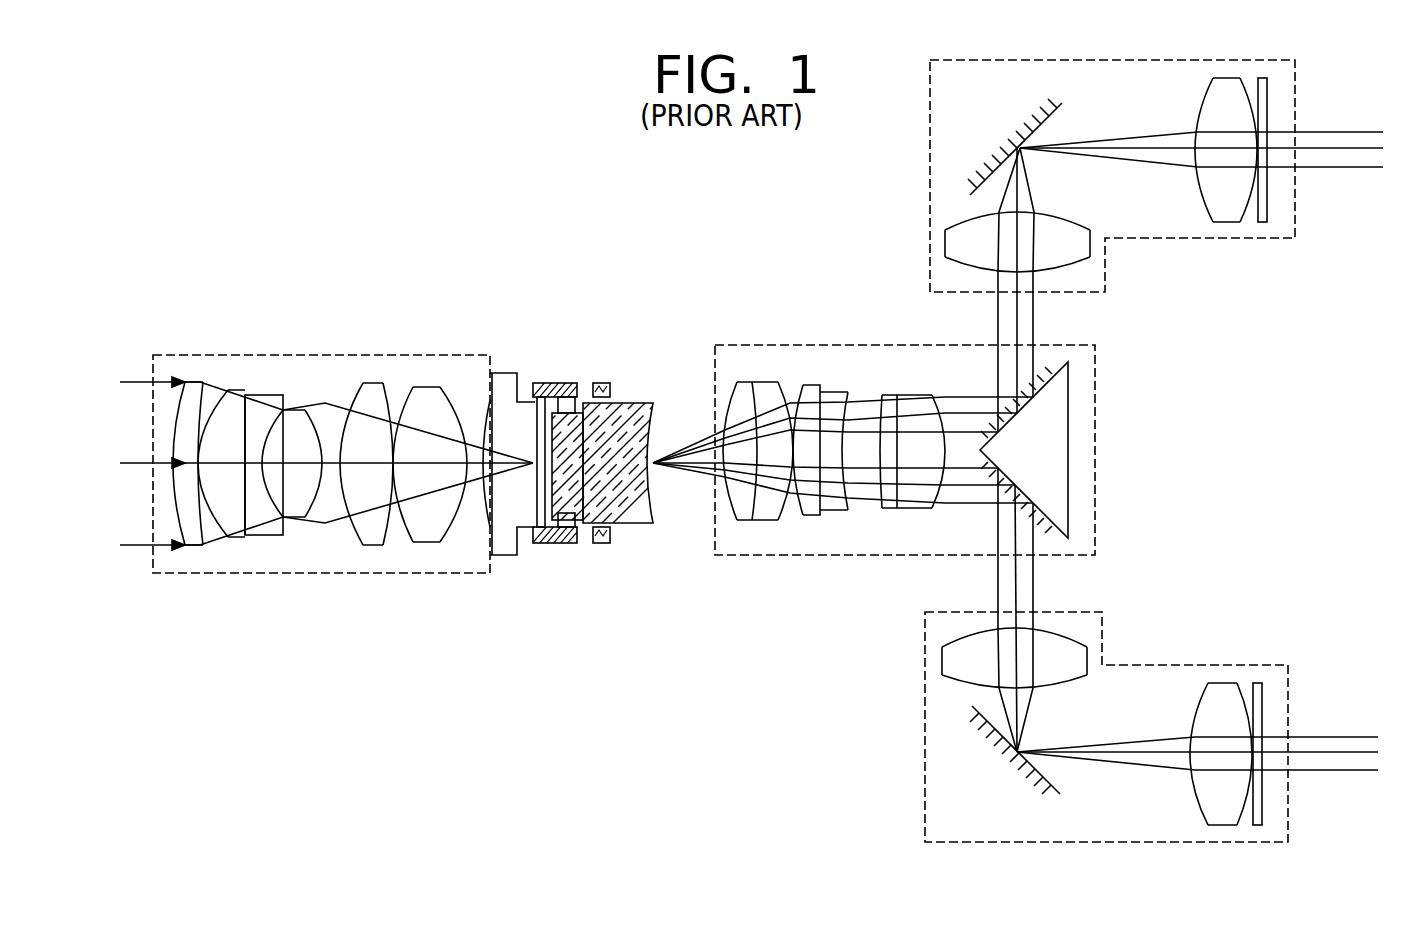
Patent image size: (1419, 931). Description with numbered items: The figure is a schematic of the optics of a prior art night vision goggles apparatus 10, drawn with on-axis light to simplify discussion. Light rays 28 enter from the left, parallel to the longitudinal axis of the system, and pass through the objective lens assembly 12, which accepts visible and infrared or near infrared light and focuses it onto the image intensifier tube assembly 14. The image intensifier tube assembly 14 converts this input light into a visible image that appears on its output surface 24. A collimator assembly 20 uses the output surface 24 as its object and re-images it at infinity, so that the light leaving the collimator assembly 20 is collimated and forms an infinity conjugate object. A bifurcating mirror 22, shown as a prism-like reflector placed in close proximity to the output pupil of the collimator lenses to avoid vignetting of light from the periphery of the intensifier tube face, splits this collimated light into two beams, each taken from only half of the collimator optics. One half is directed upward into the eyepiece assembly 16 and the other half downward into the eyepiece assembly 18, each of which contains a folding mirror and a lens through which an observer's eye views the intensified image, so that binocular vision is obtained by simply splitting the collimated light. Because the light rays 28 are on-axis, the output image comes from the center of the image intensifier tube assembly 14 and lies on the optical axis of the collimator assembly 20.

The night vision goggles apparatus 10 is at (795, 231).
The objective lens assembly 12 is at (288, 353).
The image intensifier tube assembly 14 is at (550, 378).
The eyepiece assembly 16 is at (1185, 240).
The eyepiece assembly 18 is at (1183, 663).
The collimator assembly 20 is at (770, 343).
The bifurcating mirror 22 is at (1047, 448).
The output surface 24 is at (663, 513).
The light rays 28 is at (135, 380).